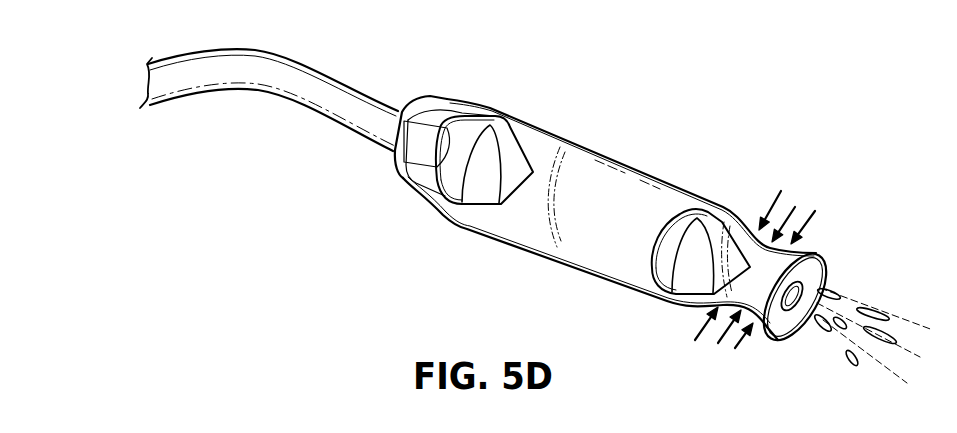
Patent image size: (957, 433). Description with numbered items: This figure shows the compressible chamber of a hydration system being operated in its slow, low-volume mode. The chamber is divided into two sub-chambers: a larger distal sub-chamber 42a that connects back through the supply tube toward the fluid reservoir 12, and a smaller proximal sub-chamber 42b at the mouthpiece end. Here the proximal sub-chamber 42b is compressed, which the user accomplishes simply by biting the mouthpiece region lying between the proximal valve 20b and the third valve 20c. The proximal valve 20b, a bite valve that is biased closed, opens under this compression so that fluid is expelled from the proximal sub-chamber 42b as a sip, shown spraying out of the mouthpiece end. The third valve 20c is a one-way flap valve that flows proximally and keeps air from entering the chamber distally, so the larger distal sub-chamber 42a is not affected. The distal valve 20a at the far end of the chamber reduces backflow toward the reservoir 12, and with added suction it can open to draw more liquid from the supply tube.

The fluid reservoir 12 is at (352, 88).
The distal valve 20a is at (505, 148).
The proximal valve 20b is at (820, 288).
The third valve 20c is at (710, 237).
The distal sub-chamber 42a is at (527, 218).
The proximal sub-chamber 42b is at (803, 267).